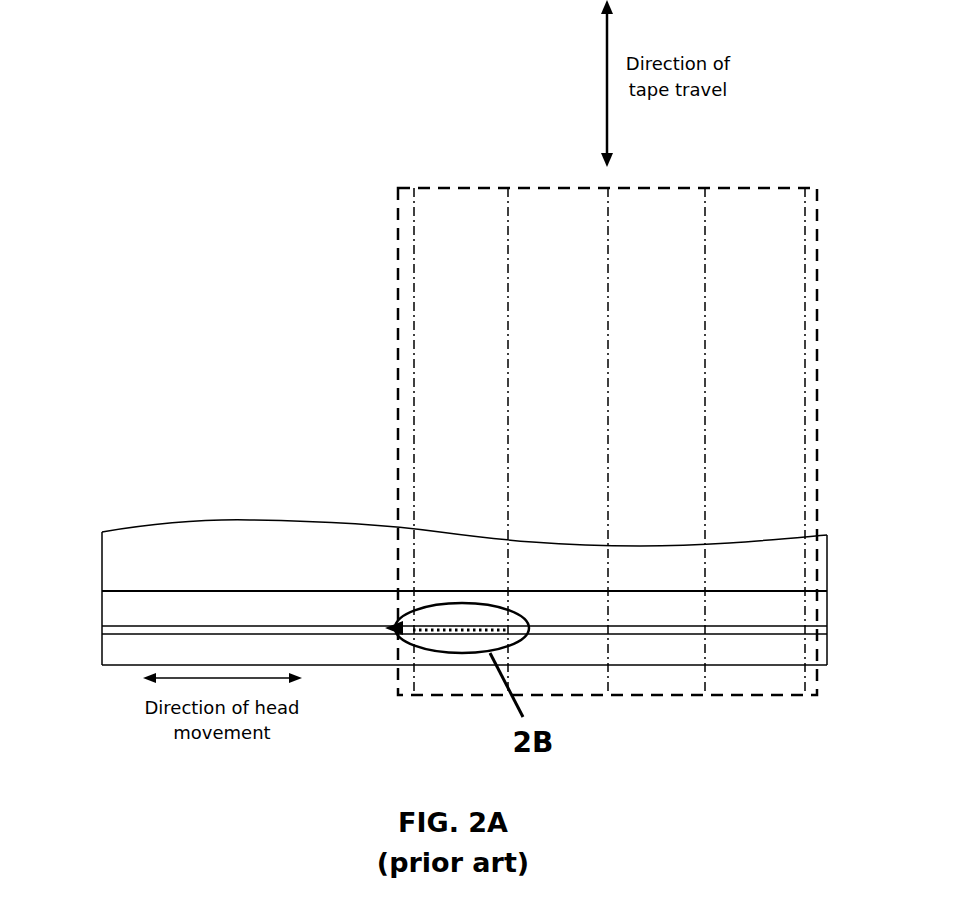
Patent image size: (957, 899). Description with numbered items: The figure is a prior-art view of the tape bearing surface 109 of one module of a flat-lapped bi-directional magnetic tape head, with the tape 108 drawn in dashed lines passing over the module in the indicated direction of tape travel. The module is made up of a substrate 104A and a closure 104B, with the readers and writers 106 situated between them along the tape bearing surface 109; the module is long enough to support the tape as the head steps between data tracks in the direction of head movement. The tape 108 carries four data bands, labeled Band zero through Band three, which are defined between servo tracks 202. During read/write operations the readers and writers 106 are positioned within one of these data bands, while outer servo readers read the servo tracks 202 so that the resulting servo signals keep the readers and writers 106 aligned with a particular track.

The tape 108 is at (398, 263).
The servo tracks 202 is at (508, 382).
The substrate 104A is at (238, 520).
The closure 104B is at (102, 648).
The tape bearing surface 109 is at (298, 612).
The readers and writers 106 is at (392, 626).